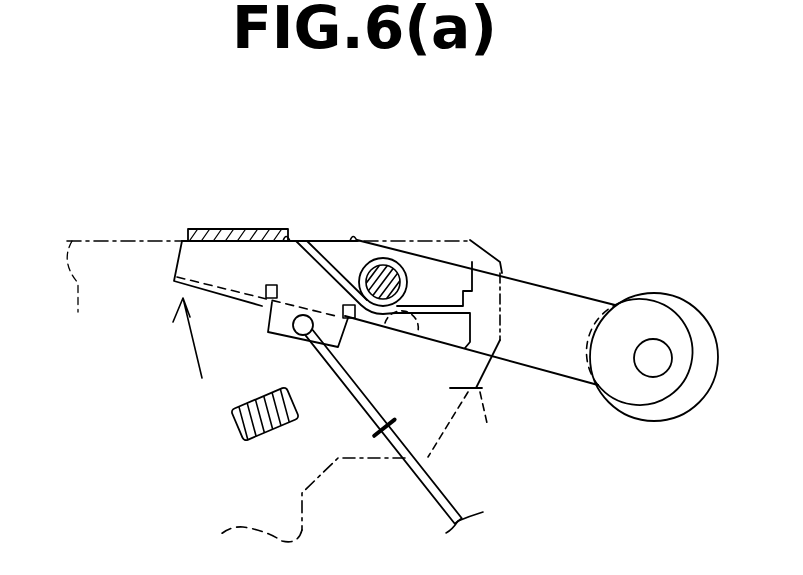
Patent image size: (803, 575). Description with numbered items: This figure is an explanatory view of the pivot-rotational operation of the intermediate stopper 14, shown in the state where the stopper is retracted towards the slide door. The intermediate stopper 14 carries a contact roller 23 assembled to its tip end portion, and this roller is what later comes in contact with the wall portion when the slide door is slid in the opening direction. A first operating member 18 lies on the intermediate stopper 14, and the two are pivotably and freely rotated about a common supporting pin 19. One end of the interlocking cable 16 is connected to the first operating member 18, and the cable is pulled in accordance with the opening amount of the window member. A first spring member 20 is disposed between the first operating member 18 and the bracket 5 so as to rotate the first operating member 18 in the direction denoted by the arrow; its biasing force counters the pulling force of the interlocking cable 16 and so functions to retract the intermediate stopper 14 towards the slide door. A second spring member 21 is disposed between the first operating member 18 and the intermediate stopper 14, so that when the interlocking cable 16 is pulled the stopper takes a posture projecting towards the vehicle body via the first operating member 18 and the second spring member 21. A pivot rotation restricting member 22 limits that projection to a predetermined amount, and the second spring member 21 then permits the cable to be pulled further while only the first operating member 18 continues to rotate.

The bracket 5 is at (487, 423).
The intermediate stopper 14 is at (562, 288).
The interlocking cable 16 is at (342, 379).
The first operating member 18 is at (186, 257).
The supporting pin 19 is at (396, 260).
The first spring member 20 is at (313, 266).
The second spring member 21 is at (417, 337).
The pivot rotation restricting member 22 is at (236, 428).
The contact roller 23 is at (662, 293).